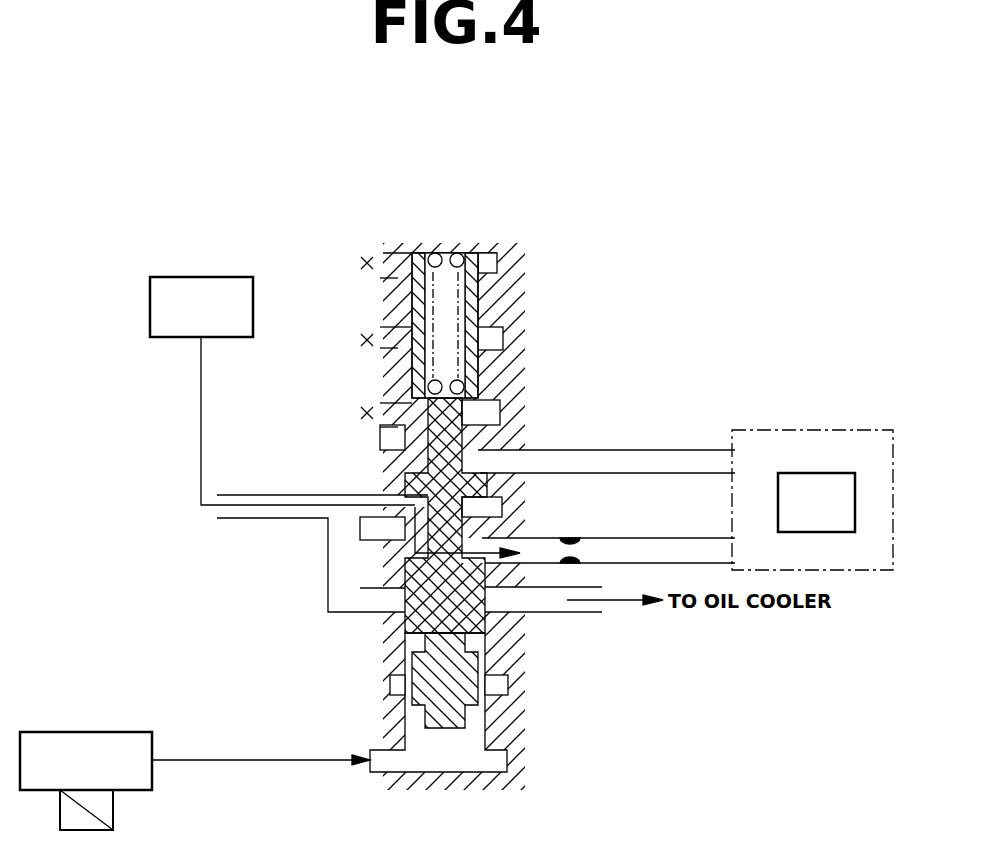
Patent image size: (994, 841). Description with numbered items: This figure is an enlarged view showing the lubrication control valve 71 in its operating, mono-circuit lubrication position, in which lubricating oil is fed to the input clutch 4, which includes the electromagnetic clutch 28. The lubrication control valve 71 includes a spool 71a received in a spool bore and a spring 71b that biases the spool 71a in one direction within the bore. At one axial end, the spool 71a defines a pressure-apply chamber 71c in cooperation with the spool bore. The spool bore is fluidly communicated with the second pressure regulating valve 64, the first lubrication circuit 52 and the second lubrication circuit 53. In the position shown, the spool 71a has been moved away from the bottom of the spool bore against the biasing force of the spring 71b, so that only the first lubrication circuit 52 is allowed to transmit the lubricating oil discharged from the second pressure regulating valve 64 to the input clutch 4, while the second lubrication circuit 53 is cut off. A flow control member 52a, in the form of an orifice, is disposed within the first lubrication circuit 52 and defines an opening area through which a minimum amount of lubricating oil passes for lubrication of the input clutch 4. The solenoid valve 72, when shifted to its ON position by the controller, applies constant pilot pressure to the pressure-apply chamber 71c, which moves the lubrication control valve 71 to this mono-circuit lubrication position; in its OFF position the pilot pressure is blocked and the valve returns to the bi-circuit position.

The input clutch 4 is at (752, 430).
The electromagnetic clutch 28 is at (830, 473).
The first lubrication circuit 52 is at (540, 538).
The flow control member 52a is at (602, 538).
The second lubrication circuit 53 is at (557, 452).
The second pressure regulating valve 64 is at (210, 277).
The lubrication control valve 71 is at (500, 723).
The spool 71a is at (467, 623).
The spring 71b is at (463, 292).
The pressure-apply chamber 71c is at (488, 763).
The solenoid valve 72 is at (153, 745).